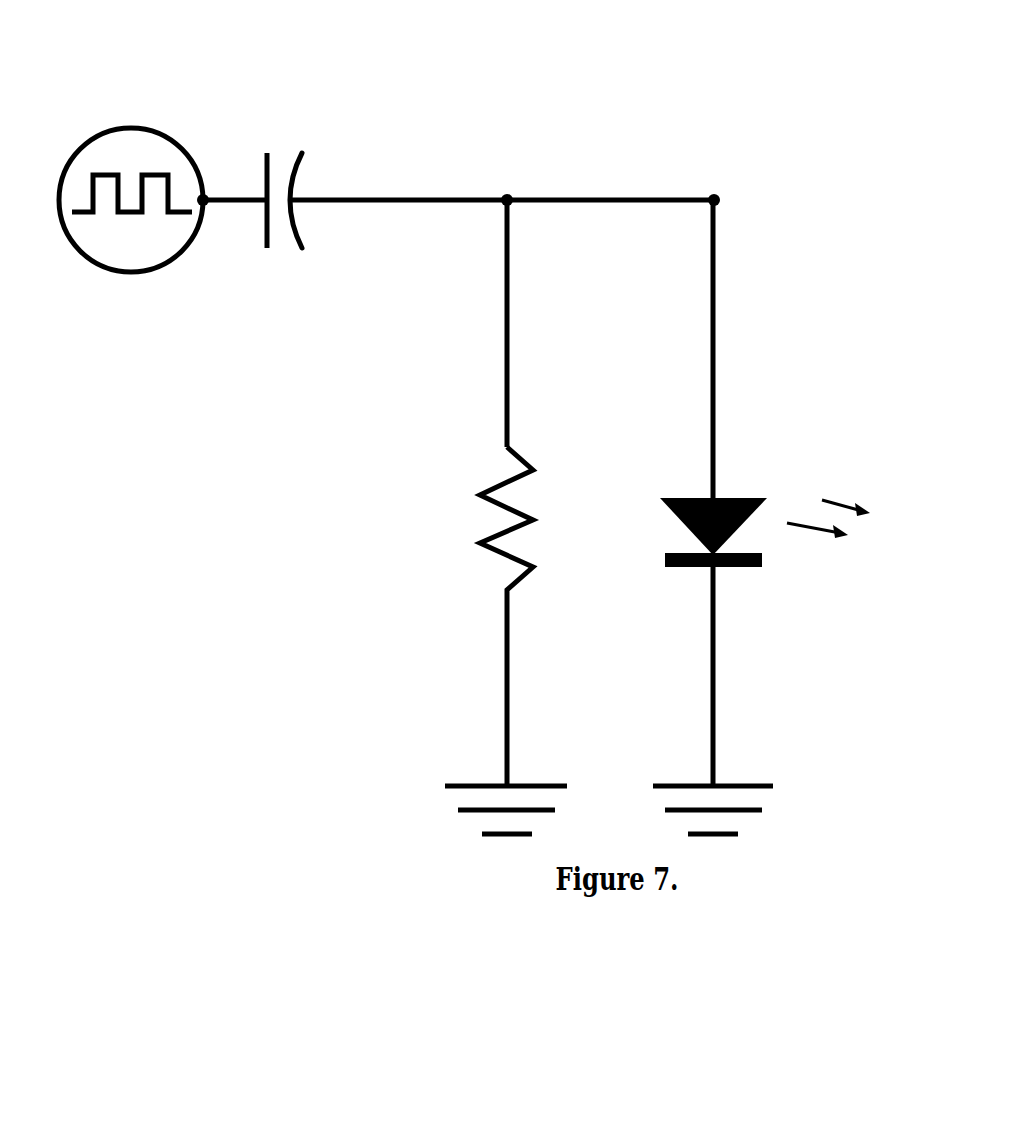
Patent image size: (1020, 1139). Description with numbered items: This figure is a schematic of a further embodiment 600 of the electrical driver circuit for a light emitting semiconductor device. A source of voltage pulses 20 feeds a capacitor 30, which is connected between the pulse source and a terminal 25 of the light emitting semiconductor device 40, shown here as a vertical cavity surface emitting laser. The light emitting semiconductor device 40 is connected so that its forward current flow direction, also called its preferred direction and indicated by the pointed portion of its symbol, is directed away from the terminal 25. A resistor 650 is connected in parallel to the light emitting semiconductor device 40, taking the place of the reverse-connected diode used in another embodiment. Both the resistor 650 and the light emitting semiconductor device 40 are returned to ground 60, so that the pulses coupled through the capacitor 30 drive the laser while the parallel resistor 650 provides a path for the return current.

The embodiment of the driver circuit 600 is at (466, 488).
The source of voltage pulses 20 is at (137, 107).
The capacitor 30 is at (310, 127).
The terminal 25 is at (503, 165).
The resistor 650 is at (465, 473).
The light emitting semiconductor device 40 is at (757, 473).
The ground 60 is at (447, 835).